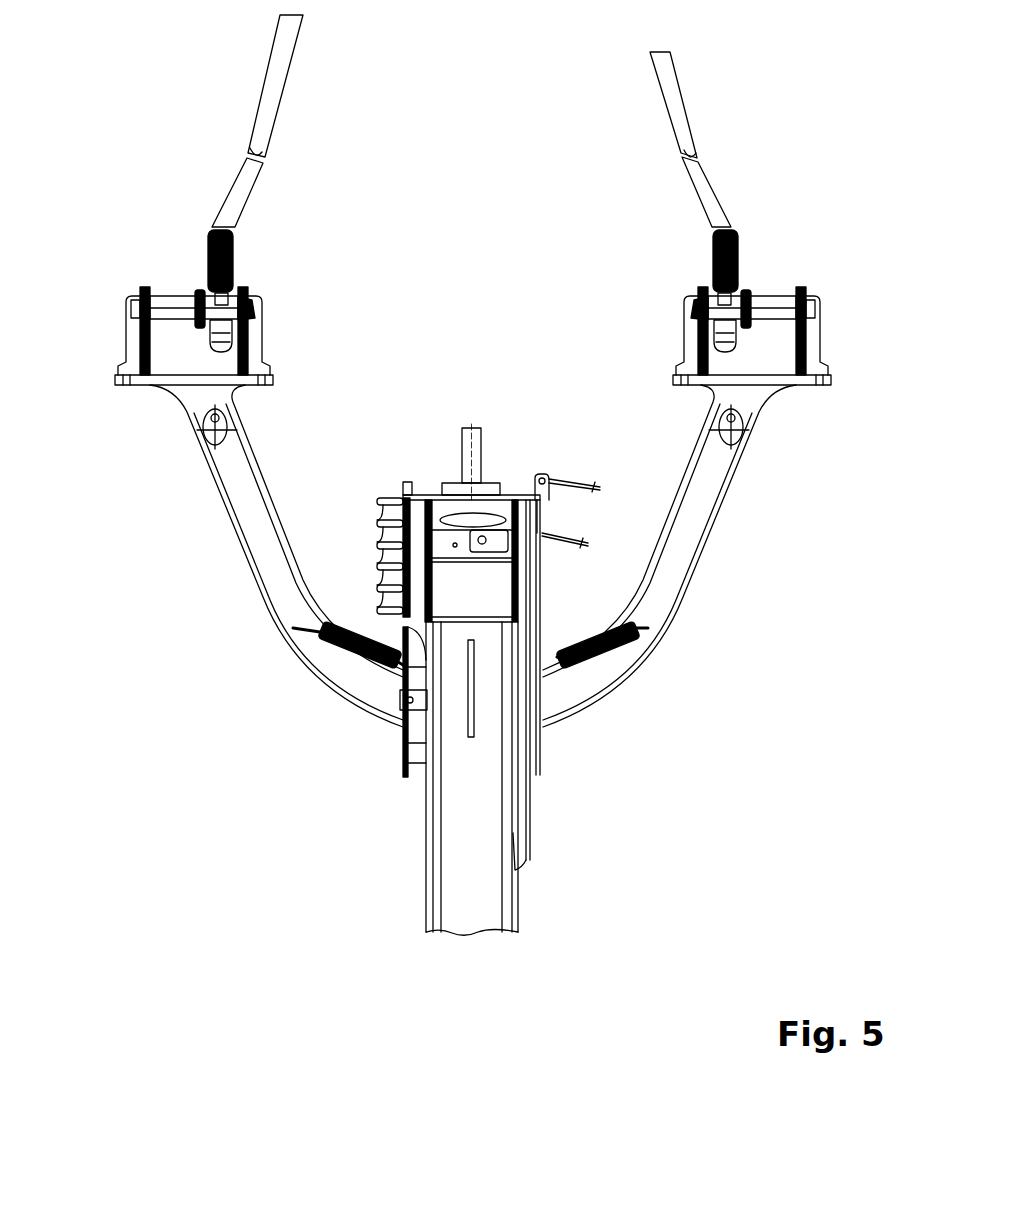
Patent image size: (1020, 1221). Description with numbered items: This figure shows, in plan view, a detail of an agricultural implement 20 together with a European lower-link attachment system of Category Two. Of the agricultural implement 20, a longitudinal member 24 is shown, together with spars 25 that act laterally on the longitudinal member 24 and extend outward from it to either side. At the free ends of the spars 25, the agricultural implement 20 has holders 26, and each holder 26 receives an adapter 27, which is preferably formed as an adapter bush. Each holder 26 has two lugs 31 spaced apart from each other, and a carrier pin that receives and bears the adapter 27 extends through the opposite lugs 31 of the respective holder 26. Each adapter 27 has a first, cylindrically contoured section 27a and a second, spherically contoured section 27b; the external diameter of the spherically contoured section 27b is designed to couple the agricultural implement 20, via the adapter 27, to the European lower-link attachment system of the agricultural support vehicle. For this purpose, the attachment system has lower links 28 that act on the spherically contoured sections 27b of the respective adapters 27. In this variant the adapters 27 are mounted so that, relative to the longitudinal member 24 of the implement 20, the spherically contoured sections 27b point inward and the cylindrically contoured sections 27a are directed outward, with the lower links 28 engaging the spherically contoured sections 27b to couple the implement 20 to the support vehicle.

The agricultural implement 20 is at (405, 868).
The longitudinal member 24 is at (473, 907).
The spars 25 is at (255, 538).
The holders 26 is at (105, 330).
The adapter 27 is at (140, 268).
The cylindrically contoured section 27a is at (170, 305).
The spherically contoured section 27b is at (217, 307).
The lower links 28 is at (278, 65).
The lugs 31 is at (140, 343).